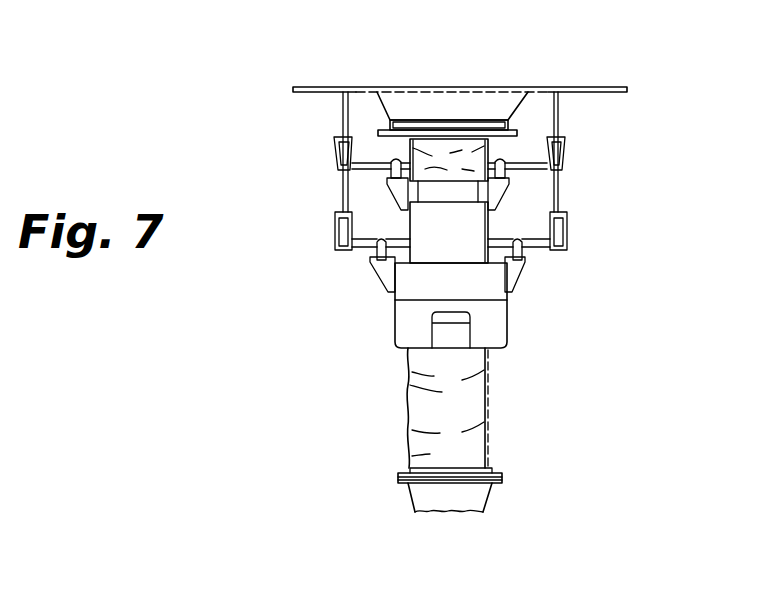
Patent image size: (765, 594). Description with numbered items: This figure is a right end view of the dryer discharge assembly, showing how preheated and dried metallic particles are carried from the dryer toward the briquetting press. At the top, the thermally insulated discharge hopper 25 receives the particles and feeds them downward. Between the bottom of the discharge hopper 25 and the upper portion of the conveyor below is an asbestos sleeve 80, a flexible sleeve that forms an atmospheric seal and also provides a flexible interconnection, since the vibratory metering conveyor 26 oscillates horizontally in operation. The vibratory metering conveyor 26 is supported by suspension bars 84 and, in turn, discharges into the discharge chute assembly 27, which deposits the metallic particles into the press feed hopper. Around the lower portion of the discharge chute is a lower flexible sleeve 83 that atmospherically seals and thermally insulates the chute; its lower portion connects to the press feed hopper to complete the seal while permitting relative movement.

The discharge hopper 25 is at (383, 95).
The asbestos sleeve 80 is at (410, 146).
The suspension bars 84 is at (558, 193).
The vibratory metering conveyor 26 is at (395, 321).
The lower flexible sleeve 83 is at (410, 386).
The discharge chute assembly 27 is at (420, 455).